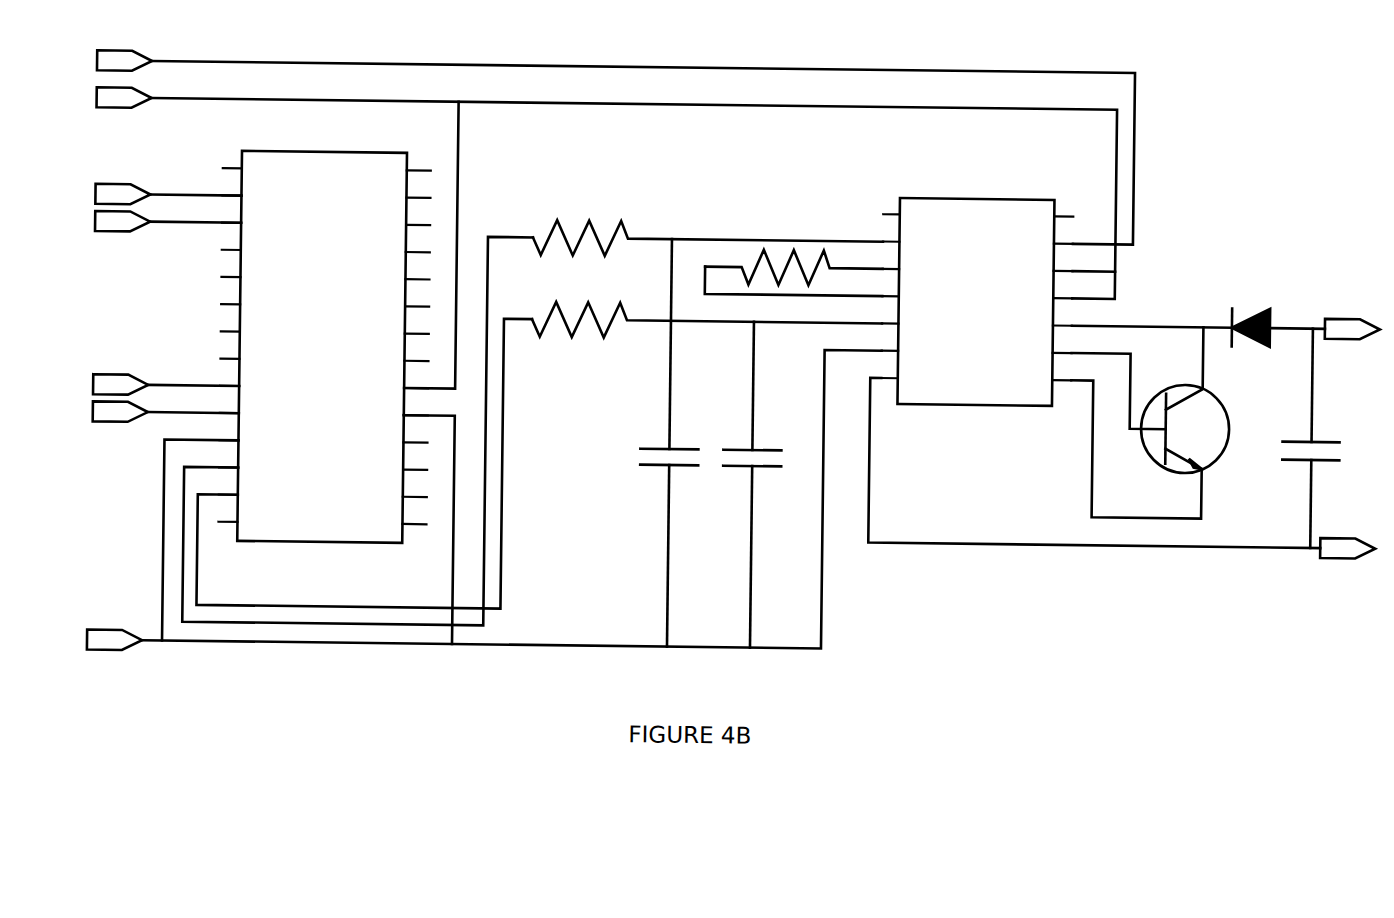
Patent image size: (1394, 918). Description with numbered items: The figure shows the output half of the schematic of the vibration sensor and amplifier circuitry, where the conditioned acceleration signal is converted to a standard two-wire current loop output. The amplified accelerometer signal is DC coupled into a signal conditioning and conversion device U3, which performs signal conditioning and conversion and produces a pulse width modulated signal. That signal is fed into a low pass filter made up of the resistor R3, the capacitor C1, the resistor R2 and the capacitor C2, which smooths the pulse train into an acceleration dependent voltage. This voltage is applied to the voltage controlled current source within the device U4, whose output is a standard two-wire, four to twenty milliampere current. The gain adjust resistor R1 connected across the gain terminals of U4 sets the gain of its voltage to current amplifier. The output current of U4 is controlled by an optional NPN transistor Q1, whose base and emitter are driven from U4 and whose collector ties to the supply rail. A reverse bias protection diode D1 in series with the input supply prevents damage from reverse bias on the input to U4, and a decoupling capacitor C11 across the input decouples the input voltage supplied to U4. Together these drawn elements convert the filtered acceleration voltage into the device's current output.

The signal conditioning and conversion device U3 is at (322, 345).
The voltage controlled current source U4 is at (981, 302).
The gain adjust resistor R1 is at (794, 242).
The low pass filter resistor R2 is at (706, 347).
The low pass filter resistor R3 is at (708, 210).
The low pass filter capacitor C1 is at (652, 442).
The low pass filter capacitor C2 is at (768, 484).
The decoupling capacitor C11 is at (1336, 438).
The reverse bias protection diode D1 is at (1199, 313).
The NPN transistor Q1 is at (1189, 423).